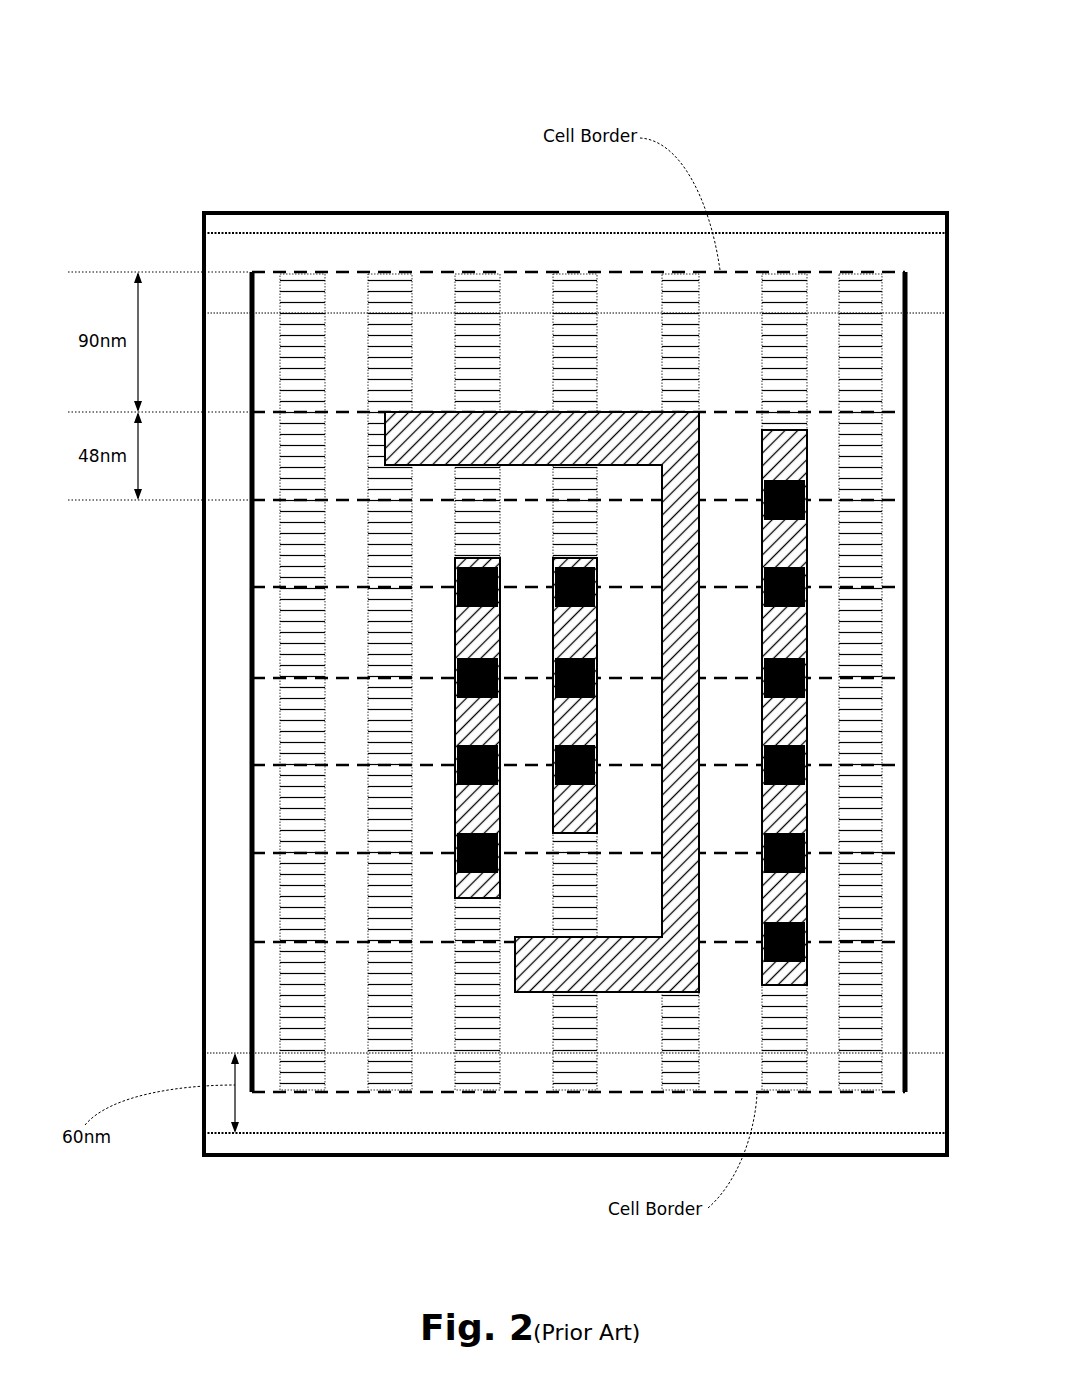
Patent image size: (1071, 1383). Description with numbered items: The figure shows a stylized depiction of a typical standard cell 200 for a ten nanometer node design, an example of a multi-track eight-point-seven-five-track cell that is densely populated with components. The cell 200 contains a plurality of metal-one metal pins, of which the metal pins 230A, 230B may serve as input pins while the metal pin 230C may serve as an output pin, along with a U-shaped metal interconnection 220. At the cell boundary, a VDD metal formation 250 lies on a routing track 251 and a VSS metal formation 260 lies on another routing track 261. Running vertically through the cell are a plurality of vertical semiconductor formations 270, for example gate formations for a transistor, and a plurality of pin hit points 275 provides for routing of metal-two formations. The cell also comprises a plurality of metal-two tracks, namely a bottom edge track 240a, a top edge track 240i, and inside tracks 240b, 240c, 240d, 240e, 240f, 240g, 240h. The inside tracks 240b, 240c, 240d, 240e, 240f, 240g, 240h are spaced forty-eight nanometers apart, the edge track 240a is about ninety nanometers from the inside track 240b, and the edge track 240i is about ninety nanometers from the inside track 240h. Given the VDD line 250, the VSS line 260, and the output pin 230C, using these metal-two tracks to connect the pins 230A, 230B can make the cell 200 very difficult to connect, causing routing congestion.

The standard cell 200 is at (262, 40).
The U-shaped metal interconnection 220 is at (535, 965).
The metal pin 230A is at (475, 890).
The metal pin 230B is at (570, 822).
The metal pin 230C is at (785, 982).
The M2 bottom edge track 240a is at (917, 1094).
The inside M2 track 240b is at (268, 940).
The inside M2 track 240c is at (268, 853).
The inside M2 track 240d is at (268, 765).
The inside M2 track 240e is at (268, 678).
The inside M2 track 240f is at (268, 587).
The inside M2 track 240g is at (268, 500).
The inside M2 track 240h is at (265, 410).
The M2 top edge track 240i is at (930, 270).
The VDD metal formation 250 is at (535, 253).
The routing track 251 is at (513, 268).
The VSS metal formation 260 is at (535, 1115).
The routing track 261 is at (640, 1095).
The vertical semiconductor formation 270 is at (390, 650).
The pin hit point 275 is at (570, 687).